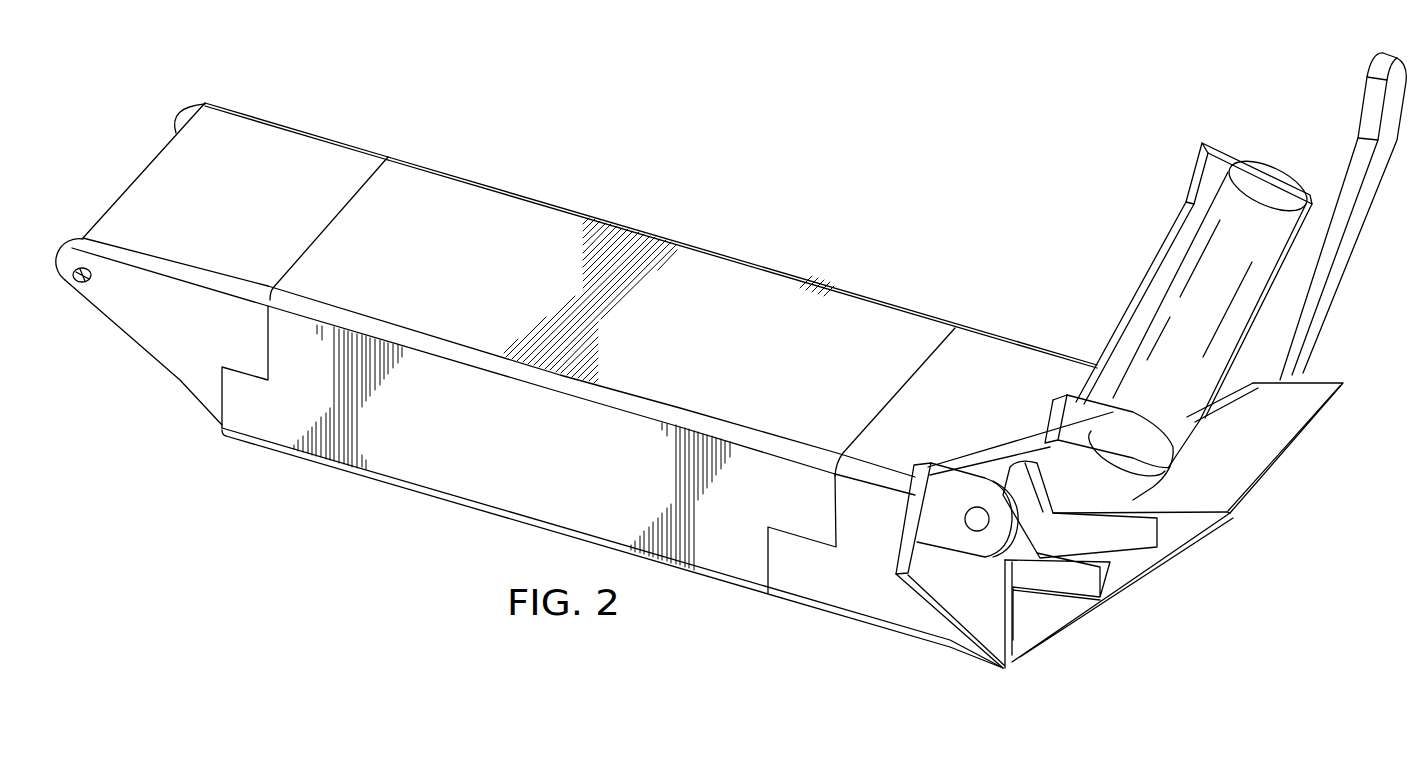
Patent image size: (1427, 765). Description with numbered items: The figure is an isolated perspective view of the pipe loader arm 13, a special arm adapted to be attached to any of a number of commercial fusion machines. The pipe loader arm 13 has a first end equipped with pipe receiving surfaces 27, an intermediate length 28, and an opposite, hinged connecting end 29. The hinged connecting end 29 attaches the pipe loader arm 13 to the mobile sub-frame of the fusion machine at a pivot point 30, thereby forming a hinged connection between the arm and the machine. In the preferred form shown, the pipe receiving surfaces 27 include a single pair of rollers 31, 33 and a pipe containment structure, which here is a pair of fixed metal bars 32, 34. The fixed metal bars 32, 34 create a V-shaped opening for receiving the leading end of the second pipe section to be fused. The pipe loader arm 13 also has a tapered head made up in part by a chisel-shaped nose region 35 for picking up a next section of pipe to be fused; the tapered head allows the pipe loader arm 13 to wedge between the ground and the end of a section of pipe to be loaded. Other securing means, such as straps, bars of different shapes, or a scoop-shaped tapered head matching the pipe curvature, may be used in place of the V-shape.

The pipe loader arm 13 is at (822, 152).
The pipe receiving surfaces 27 is at (1120, 267).
The intermediate length 28 is at (763, 277).
The hinged connecting end 29 is at (300, 140).
The pivot point 30 is at (82, 283).
The roller 31 is at (1280, 185).
The fixed metal bar 32 is at (1143, 552).
The roller 33 is at (1033, 460).
The fixed metal bar 34 is at (1365, 203).
The chisel-shaped nose region 35 is at (1273, 447).